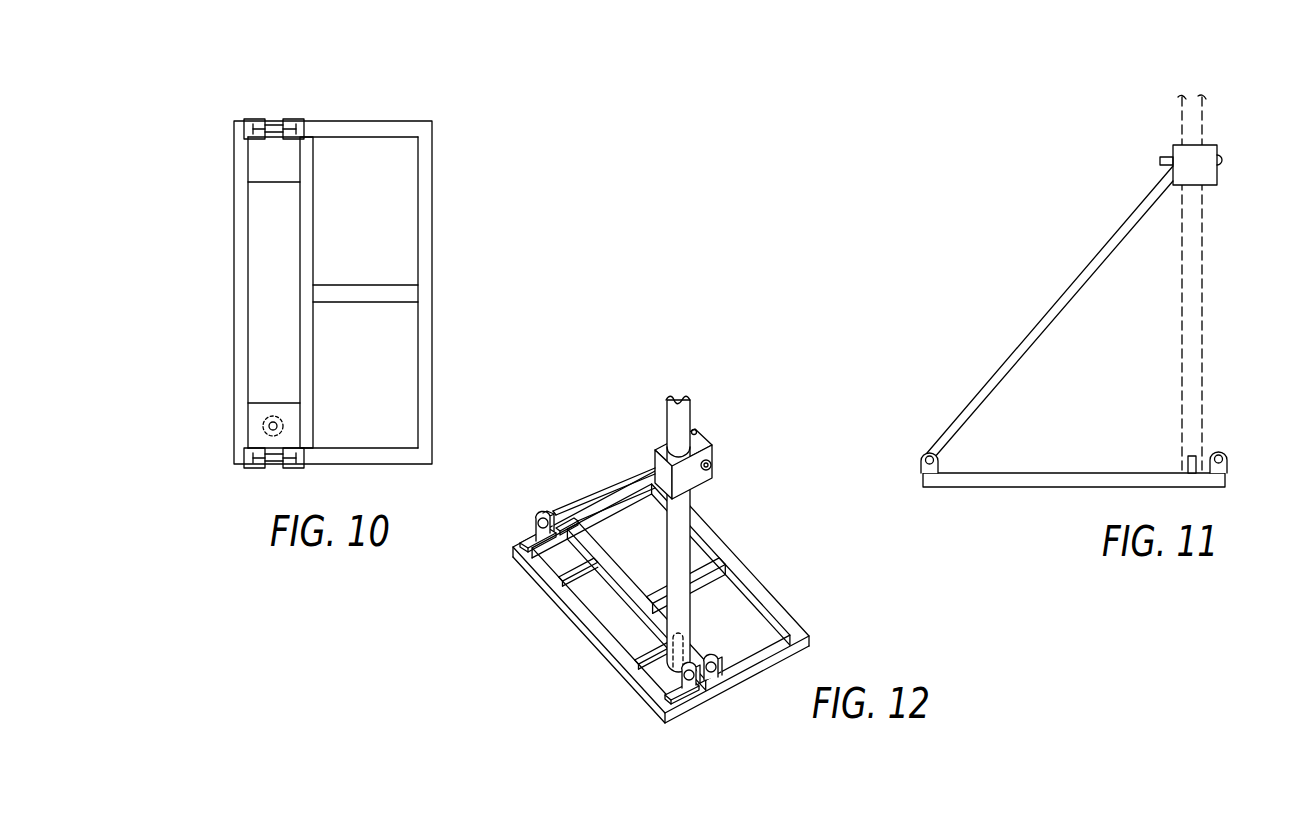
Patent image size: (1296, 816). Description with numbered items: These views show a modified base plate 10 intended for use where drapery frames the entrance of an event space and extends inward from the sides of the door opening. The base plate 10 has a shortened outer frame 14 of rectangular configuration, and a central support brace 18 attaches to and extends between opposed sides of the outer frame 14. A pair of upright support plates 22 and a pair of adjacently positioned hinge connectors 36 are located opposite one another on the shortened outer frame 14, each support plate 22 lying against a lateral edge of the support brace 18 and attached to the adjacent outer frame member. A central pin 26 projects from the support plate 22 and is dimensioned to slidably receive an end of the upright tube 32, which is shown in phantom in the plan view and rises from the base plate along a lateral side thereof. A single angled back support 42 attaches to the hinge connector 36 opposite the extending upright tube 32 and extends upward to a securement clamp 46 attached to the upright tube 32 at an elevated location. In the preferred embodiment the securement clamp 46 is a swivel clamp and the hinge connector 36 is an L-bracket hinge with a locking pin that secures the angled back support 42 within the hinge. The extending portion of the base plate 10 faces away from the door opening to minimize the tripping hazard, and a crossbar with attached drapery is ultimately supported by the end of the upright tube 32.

In FIG. 10, the base plate 10 is at (302, 280).
In FIG. 10, the outer frame 14 is at (301, 289).
In FIG. 12, the outer frame 14 is at (667, 596).
In FIG. 11, the outer frame 14 is at (1040, 490).
In FIG. 10, the central support brace 18 is at (308, 222).
In FIG. 12, the central support brace 18 is at (646, 606).
In FIG. 10, the upright support plate 22 is at (258, 174).
In FIG. 12, the upright support plate 22 is at (616, 613).
In FIG. 10, the central pin 26 is at (282, 420).
In FIG. 12, the central pin 26 is at (678, 650).
In FIG. 11, the central pin 26 is at (1187, 458).
In FIG. 10, the upright tube 32 is at (265, 425).
In FIG. 12, the upright tube 32 is at (710, 534).
In FIG. 11, the upright tube 32 is at (1190, 356).
In FIG. 10, the hinge connector 36 is at (279, 127).
In FIG. 12, the hinge connector 36 is at (534, 540).
In FIG. 11, the hinge connector 36 is at (920, 460).
In FIG. 12, the angled back support 42 is at (614, 488).
In FIG. 11, the angled back support 42 is at (1068, 292).
In FIG. 11, the securement clamp 46 is at (1212, 150).